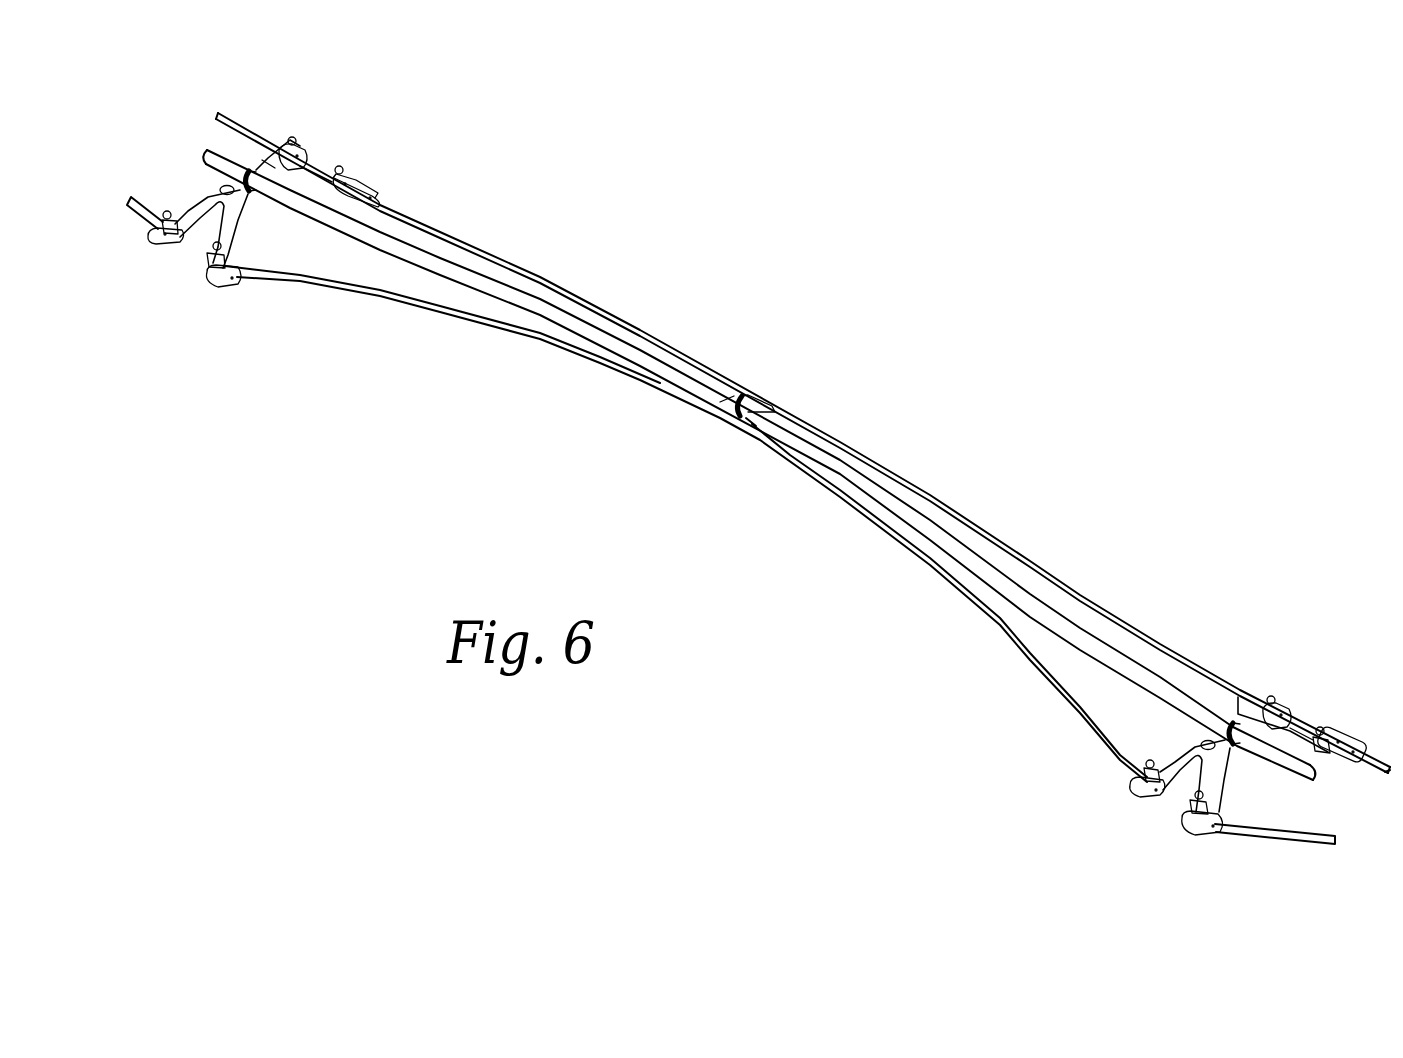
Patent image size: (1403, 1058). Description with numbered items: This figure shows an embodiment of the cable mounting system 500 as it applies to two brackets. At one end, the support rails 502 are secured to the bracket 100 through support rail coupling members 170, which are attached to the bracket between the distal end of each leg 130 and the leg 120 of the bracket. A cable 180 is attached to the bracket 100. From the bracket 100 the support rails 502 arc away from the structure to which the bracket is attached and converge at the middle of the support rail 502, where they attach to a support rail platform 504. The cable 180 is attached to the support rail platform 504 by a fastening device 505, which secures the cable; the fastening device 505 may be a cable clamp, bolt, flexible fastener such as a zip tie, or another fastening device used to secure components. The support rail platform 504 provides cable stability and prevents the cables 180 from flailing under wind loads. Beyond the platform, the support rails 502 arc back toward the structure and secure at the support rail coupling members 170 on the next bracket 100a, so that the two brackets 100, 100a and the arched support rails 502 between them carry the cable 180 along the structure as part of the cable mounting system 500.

The bracket 100 is at (1228, 715).
The next bracket 100a is at (302, 178).
The leg 120 is at (1177, 773).
The leg 130 is at (1353, 738).
The support rail coupling member 170 is at (206, 258).
The cable 180 is at (1063, 630).
The cable mounting system 500 is at (910, 320).
The support rail 502 is at (1044, 563).
The support rail platform 504 is at (718, 400).
The fastening device 505 is at (738, 400).